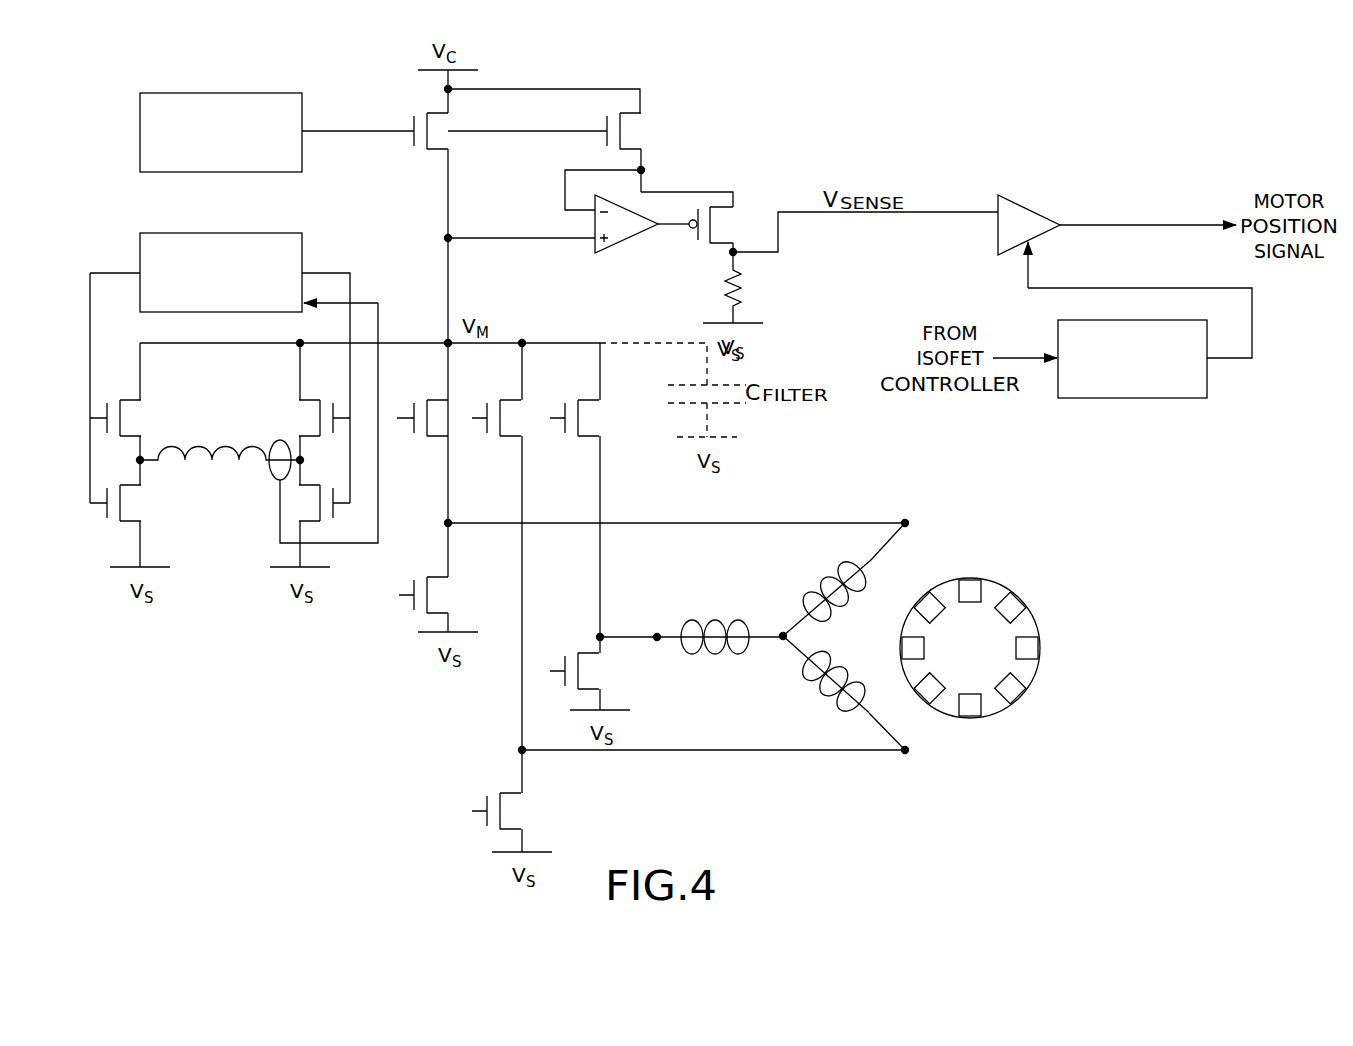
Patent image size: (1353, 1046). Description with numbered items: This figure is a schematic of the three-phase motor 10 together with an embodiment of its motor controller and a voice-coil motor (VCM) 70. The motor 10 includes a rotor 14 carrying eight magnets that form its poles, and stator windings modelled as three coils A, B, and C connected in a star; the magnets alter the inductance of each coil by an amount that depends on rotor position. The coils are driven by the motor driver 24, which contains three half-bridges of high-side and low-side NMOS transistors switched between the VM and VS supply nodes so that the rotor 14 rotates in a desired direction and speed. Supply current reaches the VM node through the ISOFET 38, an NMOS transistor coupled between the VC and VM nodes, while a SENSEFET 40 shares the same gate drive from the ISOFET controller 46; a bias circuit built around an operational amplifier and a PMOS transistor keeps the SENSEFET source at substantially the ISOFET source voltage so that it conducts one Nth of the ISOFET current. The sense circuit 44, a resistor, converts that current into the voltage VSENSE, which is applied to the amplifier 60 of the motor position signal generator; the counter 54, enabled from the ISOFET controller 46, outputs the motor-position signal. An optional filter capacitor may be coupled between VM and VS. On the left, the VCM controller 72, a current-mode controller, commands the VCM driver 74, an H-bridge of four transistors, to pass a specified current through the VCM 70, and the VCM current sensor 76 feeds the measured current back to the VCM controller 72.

The motor 10 is at (1040, 530).
The rotor 14 is at (1020, 597).
The motor driver 24 is at (400, 628).
The NMOS transistor (ISOFET) 38 is at (425, 150).
The sense NMOS transistor (SENSEFET) 40 is at (622, 125).
The sense circuit 44 is at (736, 272).
The ISOFET controller 46 is at (278, 93).
The counter 54 is at (1160, 399).
The amplifier 60 is at (1020, 201).
The voice-coil motor (VCM) 70 is at (206, 464).
The VCM controller 72 is at (196, 233).
The VCM driver 74 is at (290, 436).
The VCM current sensor 76 is at (271, 479).